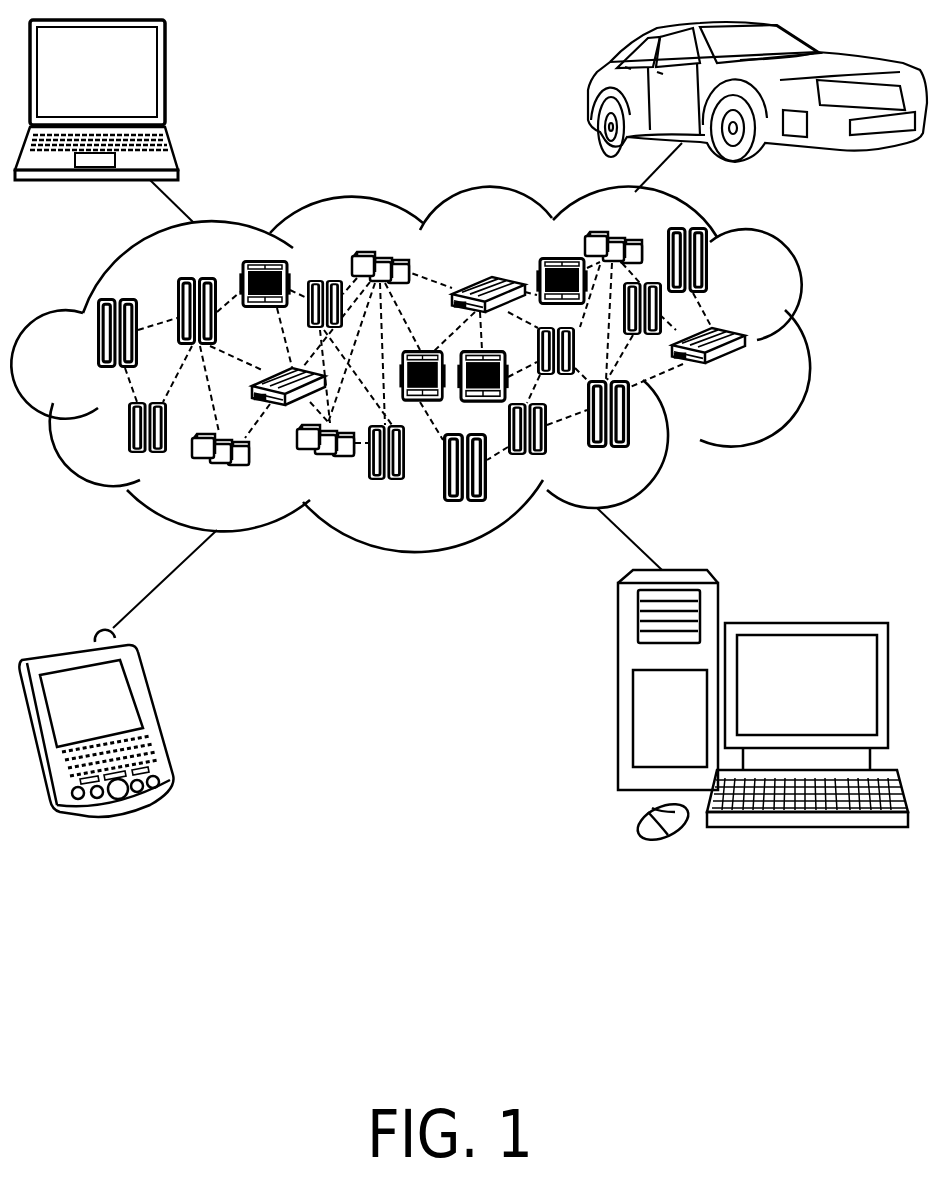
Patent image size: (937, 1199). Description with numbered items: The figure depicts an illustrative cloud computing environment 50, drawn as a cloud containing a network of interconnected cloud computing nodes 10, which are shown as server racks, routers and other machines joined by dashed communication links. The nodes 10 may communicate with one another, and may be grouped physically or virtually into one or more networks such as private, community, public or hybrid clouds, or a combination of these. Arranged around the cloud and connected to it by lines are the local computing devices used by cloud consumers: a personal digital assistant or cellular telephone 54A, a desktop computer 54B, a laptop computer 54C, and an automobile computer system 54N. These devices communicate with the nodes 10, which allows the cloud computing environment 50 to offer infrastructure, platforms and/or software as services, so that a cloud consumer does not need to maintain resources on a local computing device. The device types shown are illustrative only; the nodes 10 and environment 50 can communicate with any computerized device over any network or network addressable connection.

The cloud computing nodes 10 is at (748, 372).
The cloud computing environment 50 is at (803, 347).
The personal digital assistant or cellular telephone 54A is at (152, 715).
The desktop computer 54B is at (803, 623).
The laptop computer 54C is at (165, 80).
The automobile computer system 54N is at (590, 93).